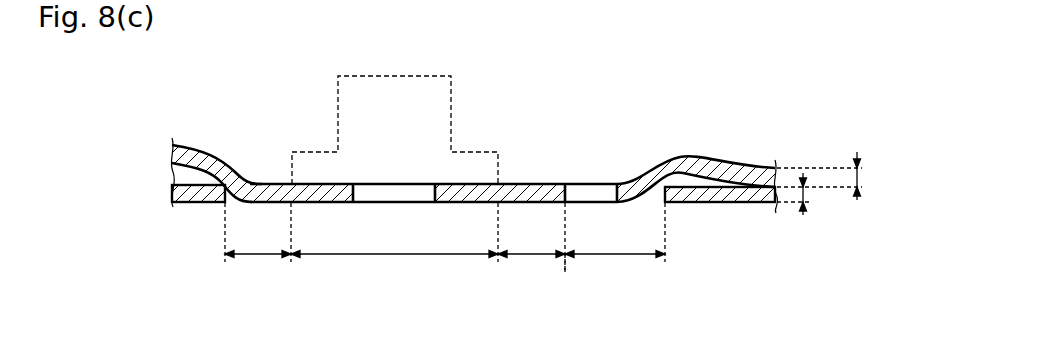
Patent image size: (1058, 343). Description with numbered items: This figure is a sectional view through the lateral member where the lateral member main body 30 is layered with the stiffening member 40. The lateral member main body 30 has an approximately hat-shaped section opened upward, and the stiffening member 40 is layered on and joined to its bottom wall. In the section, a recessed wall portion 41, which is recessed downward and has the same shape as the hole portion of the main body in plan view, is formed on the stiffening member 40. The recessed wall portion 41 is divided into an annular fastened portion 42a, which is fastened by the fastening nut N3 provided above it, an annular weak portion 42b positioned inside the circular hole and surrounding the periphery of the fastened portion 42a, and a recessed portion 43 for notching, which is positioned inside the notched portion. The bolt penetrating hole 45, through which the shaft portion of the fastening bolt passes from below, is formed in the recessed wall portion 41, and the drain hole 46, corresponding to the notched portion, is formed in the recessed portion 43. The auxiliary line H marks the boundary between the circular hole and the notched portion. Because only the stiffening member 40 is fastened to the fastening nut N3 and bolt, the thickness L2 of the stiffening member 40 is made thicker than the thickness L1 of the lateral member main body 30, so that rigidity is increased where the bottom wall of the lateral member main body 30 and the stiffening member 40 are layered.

The lateral member main body 30 is at (738, 207).
The stiffening member 40 is at (742, 163).
The recessed wall portion 41 is at (513, 170).
The fastened portion 42a is at (394, 244).
The weak portion 42b is at (395, 237).
The recessed portion for notching 43 is at (615, 232).
The bolt penetrating hole 45 is at (366, 184).
The drain hole 46 is at (601, 184).
The fastening nut N3 is at (397, 76).
The auxiliary line H is at (564, 274).
The thickness of the lateral member main body L1 is at (807, 194).
The thickness of the stiffening member L2 is at (834, 176).